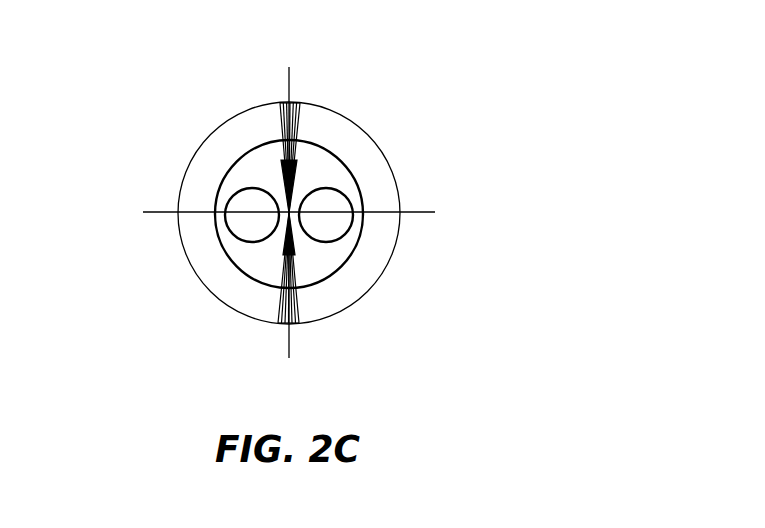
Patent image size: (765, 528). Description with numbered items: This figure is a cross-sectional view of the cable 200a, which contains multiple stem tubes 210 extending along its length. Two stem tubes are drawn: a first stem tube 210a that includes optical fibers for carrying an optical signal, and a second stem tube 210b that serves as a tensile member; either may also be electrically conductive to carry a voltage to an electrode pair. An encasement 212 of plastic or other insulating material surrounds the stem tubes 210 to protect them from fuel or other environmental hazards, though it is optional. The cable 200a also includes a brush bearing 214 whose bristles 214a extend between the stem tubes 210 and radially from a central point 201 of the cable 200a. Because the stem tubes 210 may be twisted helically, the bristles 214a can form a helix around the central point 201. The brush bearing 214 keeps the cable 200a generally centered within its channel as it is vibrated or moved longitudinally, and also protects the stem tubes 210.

The cable 200a is at (457, 73).
The central point 201 is at (305, 198).
The stem tubes 210 is at (232, 233).
The first stem tube 210a is at (333, 233).
The second stem tube 210b is at (240, 195).
The encasement 212 is at (328, 177).
The brush bearing 214 is at (303, 120).
The bristles 214a is at (280, 125).